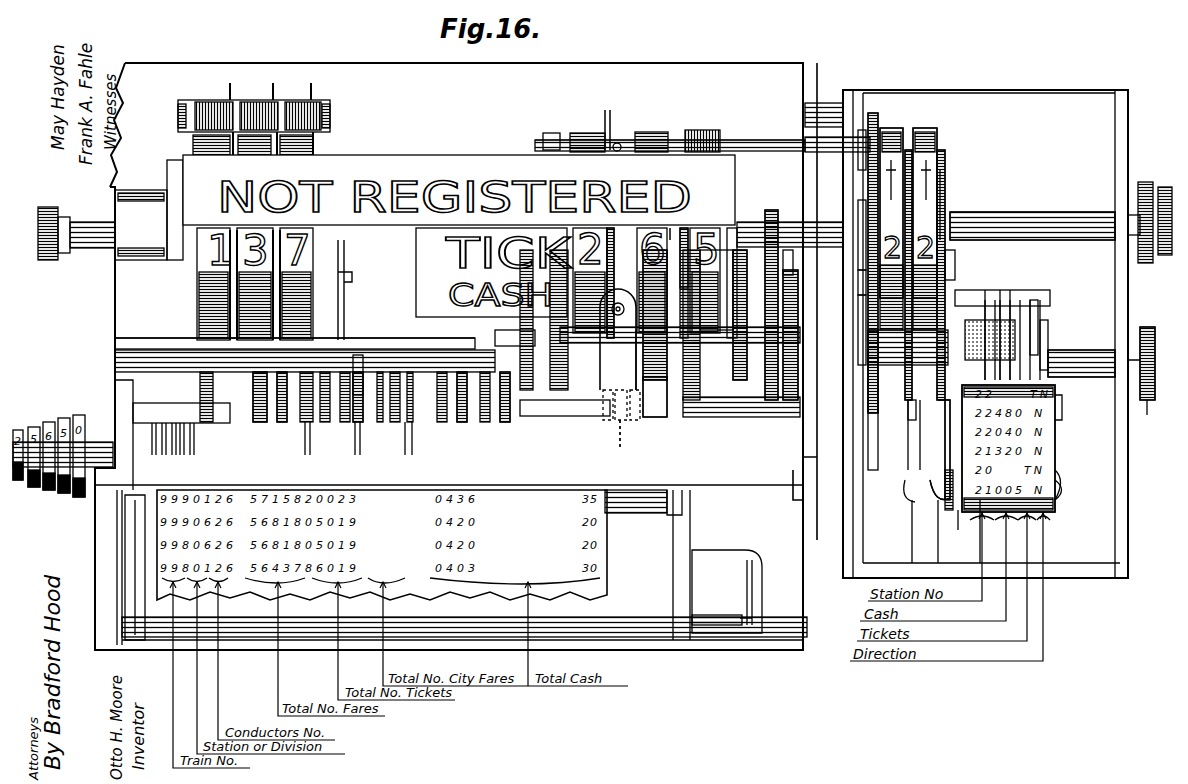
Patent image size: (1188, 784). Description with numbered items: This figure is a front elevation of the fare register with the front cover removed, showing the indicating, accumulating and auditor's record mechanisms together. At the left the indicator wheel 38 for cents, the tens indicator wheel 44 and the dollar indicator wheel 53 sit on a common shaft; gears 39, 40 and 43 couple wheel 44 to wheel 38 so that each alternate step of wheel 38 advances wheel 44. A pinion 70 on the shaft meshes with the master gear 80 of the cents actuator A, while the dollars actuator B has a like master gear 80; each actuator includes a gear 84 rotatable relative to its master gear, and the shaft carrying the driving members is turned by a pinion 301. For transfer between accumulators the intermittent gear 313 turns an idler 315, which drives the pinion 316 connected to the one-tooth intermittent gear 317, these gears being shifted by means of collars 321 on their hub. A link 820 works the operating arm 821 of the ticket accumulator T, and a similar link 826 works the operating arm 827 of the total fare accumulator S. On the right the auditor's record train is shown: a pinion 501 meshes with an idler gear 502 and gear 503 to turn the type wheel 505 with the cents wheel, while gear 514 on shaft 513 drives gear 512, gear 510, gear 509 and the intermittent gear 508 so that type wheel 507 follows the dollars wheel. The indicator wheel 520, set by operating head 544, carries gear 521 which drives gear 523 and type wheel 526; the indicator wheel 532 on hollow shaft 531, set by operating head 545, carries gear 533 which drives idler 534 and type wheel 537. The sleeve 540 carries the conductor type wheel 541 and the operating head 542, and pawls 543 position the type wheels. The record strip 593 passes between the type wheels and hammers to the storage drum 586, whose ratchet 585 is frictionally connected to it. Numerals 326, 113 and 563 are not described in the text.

The dollar indicator wheel 53 is at (580, 132).
The gear 514 is at (610, 112).
The tens indicator wheel 44 is at (650, 132).
The indicator wheel 38 is at (702, 130).
The shaft 513 is at (735, 140).
The gear 43 is at (675, 232).
The gear 39 is at (690, 238).
The pinion 70 is at (771, 210).
The gear 84 is at (745, 275).
The master gear 80 is at (787, 340).
The idler 315 is at (614, 240).
The pivot 326 is at (619, 316).
The intermittent gear 313 is at (640, 368).
The gear 40 is at (692, 345).
The pinion 316 is at (658, 420).
The collars 321 is at (618, 442).
The dollars actuator B is at (540, 415).
The one-tooth intermittent gear 317 is at (505, 415).
The rack 113 is at (462, 420).
The link 820 is at (348, 328).
The operating arm 821 is at (362, 362).
The pinion 301 is at (500, 332).
The link 826 is at (300, 362).
The total fare accumulator S is at (268, 422).
The operating arm 827 is at (292, 425).
The ticket accumulator T is at (378, 425).
The cents actuator A is at (790, 273).
The gear 512 is at (873, 112).
The gear 509 is at (890, 135).
The indicator wheel 520 is at (908, 180).
The indicator wheel 532 is at (935, 145).
The gear 521 is at (912, 190).
The gear 533 is at (942, 200).
The hollow shaft 531 is at (995, 215).
The gear 510 is at (866, 180).
The pinion 501 is at (862, 245).
The idler gear 502 is at (862, 282).
The gear 503 is at (862, 335).
The idler 534 is at (950, 268).
The pawls 543 is at (985, 290).
The type wheel 505 is at (1012, 292).
The type wheel 507 is at (1002, 292).
The disk 563 is at (1040, 305).
The type wheel 541 is at (1050, 338).
The sleeve 540 is at (1065, 356).
The operating head 545 is at (1146, 182).
The operating head 544 is at (1165, 255).
The operating head 542 is at (1147, 400).
The intermittent gear 508 is at (880, 420).
The gear 523 is at (910, 420).
The type wheel 537 is at (950, 410).
The type wheel 526 is at (915, 475).
The ratchet 585 is at (946, 488).
The storage drum 586 is at (1080, 490).
The record strip 593 is at (1056, 445).